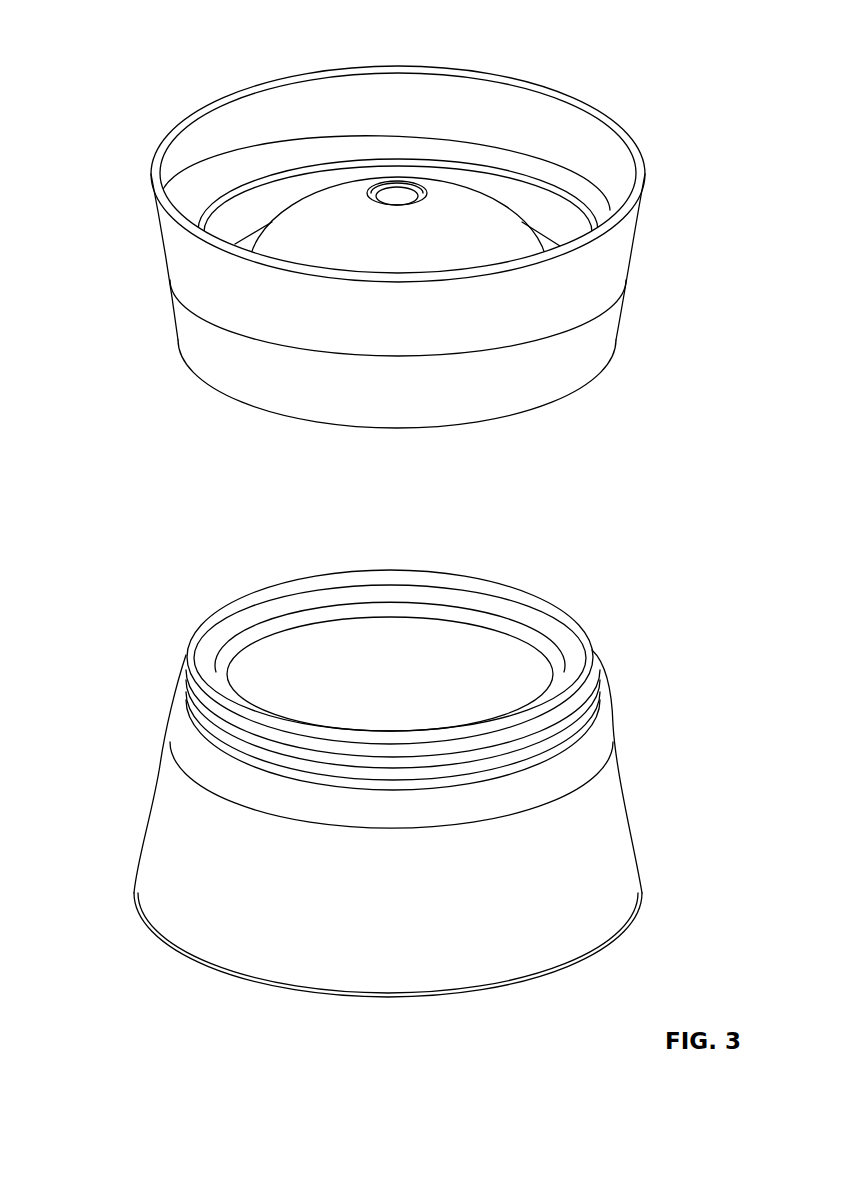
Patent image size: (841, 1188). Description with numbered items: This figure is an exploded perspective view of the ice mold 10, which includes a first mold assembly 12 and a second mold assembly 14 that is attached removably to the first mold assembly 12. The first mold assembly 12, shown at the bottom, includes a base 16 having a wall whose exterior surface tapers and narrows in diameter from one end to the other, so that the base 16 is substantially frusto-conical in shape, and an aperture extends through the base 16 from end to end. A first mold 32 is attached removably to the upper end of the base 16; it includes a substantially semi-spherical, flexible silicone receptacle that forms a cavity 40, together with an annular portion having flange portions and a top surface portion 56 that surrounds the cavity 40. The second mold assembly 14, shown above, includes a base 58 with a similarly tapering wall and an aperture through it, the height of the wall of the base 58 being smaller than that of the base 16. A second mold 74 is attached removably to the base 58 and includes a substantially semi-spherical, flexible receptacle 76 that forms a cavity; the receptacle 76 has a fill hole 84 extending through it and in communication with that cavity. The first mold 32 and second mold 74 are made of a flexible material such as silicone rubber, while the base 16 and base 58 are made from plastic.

The ice mold 10 is at (78, 63).
The first mold assembly 12 is at (429, 762).
The second mold assembly 14 is at (437, 227).
The base 16 is at (612, 873).
The first mold 32 is at (595, 750).
The cavity 40 is at (347, 673).
The top surface portion 56 is at (560, 620).
The base 58 is at (597, 282).
The second mold 74 is at (587, 353).
The receptacle 76 is at (462, 222).
The fill hole 84 is at (397, 195).